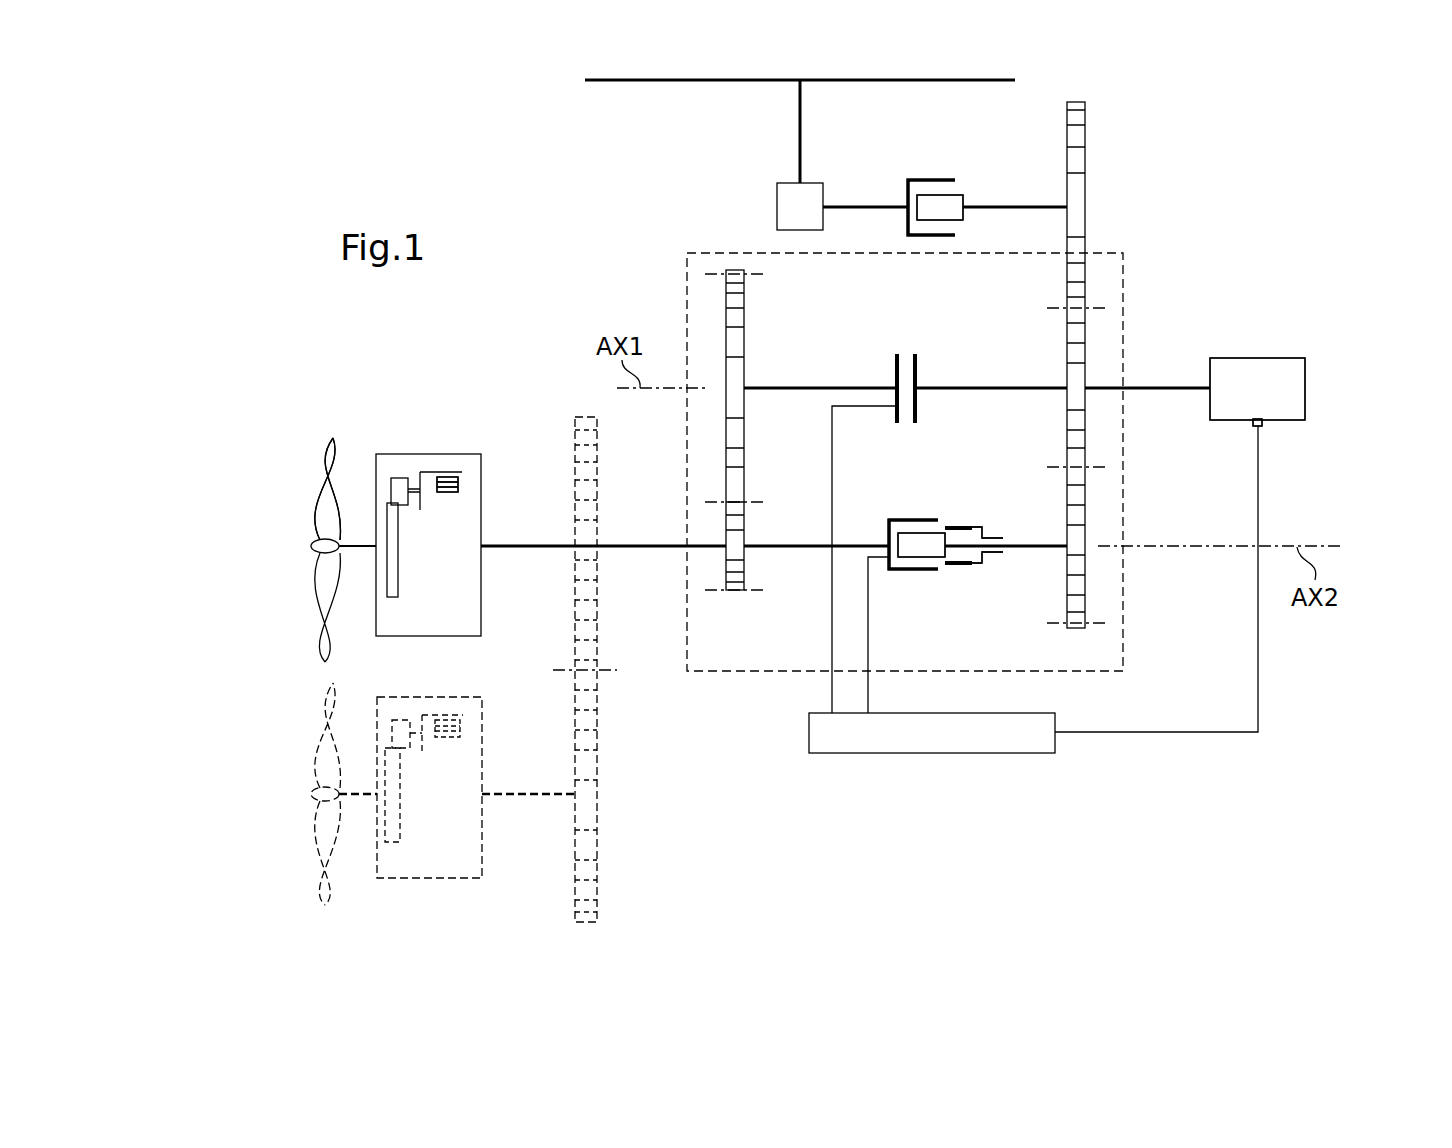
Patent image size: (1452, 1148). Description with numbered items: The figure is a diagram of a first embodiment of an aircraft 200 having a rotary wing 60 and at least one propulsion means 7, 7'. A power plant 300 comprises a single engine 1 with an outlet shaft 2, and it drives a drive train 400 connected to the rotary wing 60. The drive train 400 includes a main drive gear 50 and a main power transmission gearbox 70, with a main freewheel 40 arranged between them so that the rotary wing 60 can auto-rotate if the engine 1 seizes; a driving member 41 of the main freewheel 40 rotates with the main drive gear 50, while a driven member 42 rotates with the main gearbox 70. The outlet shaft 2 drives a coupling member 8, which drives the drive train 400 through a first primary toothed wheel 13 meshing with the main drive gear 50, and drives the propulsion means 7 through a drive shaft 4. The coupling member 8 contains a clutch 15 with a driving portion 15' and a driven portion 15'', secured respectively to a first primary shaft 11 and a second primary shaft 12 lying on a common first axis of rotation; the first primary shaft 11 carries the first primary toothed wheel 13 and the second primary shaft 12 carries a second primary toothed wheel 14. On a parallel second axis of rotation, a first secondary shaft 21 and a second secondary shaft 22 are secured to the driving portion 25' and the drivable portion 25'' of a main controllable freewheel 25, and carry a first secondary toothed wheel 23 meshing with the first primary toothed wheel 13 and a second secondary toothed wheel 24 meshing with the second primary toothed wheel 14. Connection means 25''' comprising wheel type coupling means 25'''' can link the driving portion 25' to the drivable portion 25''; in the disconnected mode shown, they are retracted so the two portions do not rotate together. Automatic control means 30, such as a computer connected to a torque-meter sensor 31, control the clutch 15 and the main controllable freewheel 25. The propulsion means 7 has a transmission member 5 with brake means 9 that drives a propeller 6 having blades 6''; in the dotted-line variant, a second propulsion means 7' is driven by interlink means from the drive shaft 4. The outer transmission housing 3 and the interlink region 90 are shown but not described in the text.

The engine 1 is at (1288, 355).
The outlet shaft 2 is at (1160, 385).
The gearbox 3 is at (688, 637).
The drive shaft 4 is at (620, 543).
The transmission member 5 is at (483, 515).
The propeller 6 is at (286, 550).
The blades 6'' is at (302, 488).
The propulsion means 7 is at (557, 669).
The propulsion means 7' is at (277, 794).
The coupling member 8 is at (617, 276).
The brake means 9 is at (450, 495).
The first primary shaft 11 is at (1015, 387).
The second primary shaft 12 is at (810, 387).
The first primary toothed wheel 13 is at (1085, 345).
The second primary toothed wheel 14 is at (743, 290).
The clutch 15 is at (921, 347).
The driving portion 15' is at (945, 378).
The driven portion 15'' is at (868, 533).
The first secondary shaft 21 is at (1048, 543).
The second secondary shaft 22 is at (790, 543).
The first secondary toothed wheel 23 is at (1067, 605).
The second secondary toothed wheel 24 is at (737, 592).
The main controllable freewheel 25 is at (946, 589).
The driving portion 25' is at (939, 577).
The drivable portion 25'' is at (908, 585).
The connection means 25''' is at (976, 516).
The coupling means 25'''' is at (1004, 587).
The control means 30 is at (932, 733).
The sensor 31 is at (1265, 423).
The main freewheel 40 is at (958, 143).
The driving member 41 is at (965, 203).
The driven member 42 is at (930, 180).
The main drive gear 50 is at (1087, 142).
The rotary wing 60 is at (720, 80).
The main power transmission gearbox 70 is at (842, 155).
The second propeller drive train 90 is at (646, 786).
The aircraft 200 is at (483, 205).
The power plant 300 is at (1348, 380).
The drive train 400 is at (1135, 195).